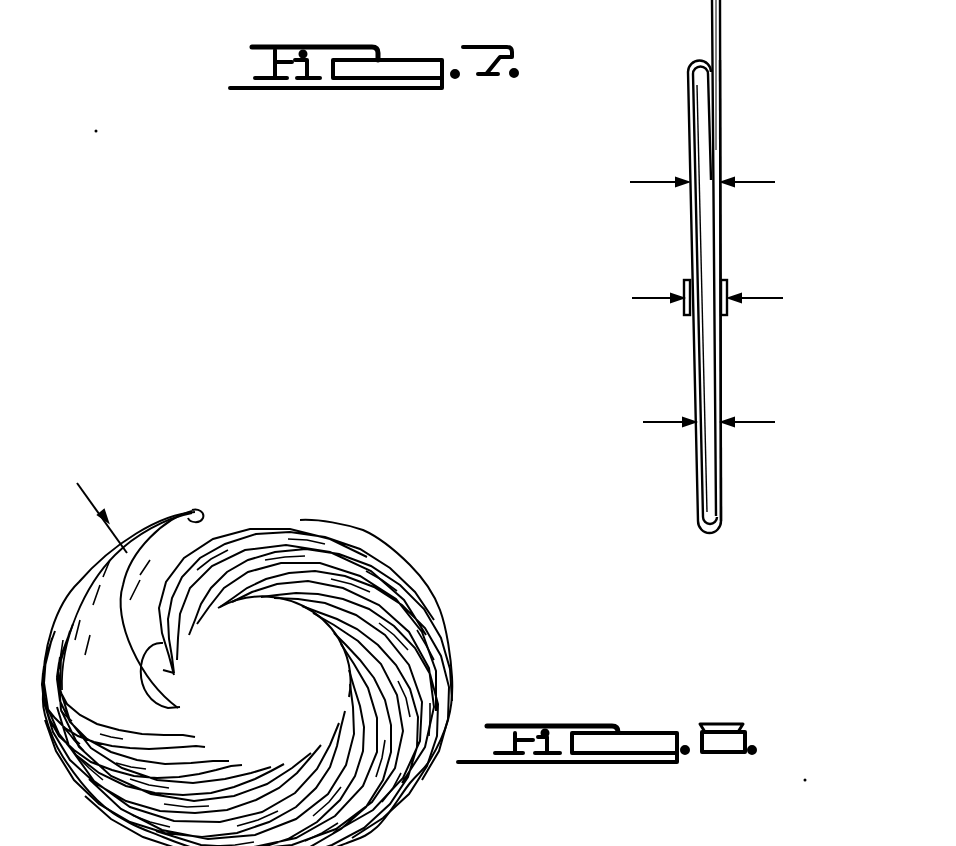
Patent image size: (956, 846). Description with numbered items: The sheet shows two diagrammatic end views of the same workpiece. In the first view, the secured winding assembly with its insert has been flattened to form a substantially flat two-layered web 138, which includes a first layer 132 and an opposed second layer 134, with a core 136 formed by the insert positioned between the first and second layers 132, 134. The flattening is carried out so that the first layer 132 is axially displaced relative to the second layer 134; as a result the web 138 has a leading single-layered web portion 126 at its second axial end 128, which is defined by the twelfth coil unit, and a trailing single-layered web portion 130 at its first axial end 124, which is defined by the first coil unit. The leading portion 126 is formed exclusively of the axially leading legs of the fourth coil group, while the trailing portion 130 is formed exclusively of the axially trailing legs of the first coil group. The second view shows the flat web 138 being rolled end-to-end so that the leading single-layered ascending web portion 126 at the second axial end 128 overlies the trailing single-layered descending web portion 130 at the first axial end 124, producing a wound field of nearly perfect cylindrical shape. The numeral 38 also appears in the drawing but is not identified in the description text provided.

In FIG. 7, the shaft 38 is at (733, 9).
In FIG. 7, the flat two-layered web 138 is at (642, 146).
In FIG. 8, the flat two-layered web 138 is at (478, 632).
In FIG. 7, the second layer 134 is at (678, 234).
In FIG. 7, the first layer 132 is at (732, 236).
In FIG. 7, the core 136 is at (702, 369).
In FIG. 8, the second axial end 128 is at (160, 492).
In FIG. 8, the leading single-layered web portion 126 is at (203, 520).
In FIG. 8, the first axial end 124 is at (236, 633).
In FIG. 8, the trailing single-layered web portion 130 is at (200, 648).